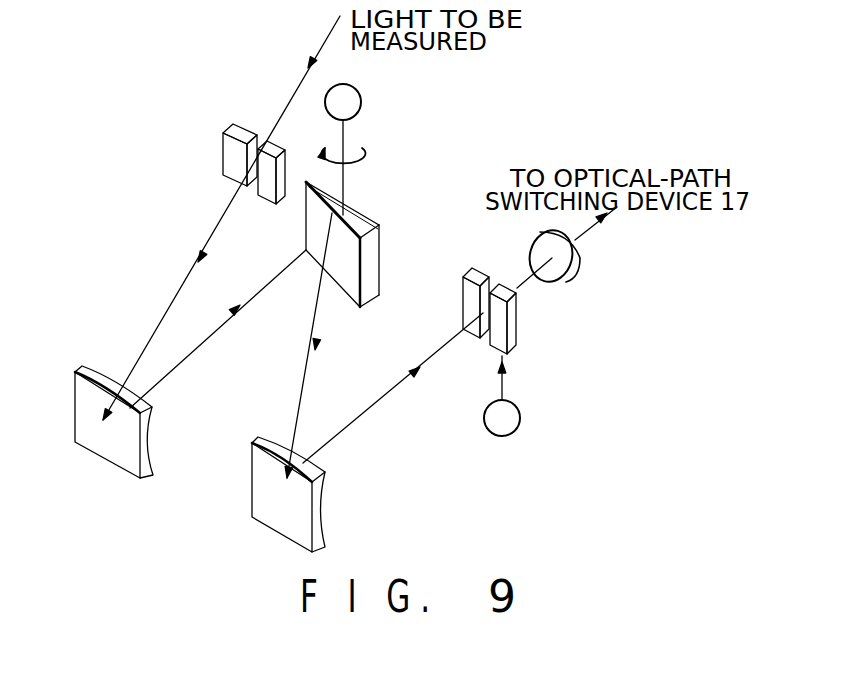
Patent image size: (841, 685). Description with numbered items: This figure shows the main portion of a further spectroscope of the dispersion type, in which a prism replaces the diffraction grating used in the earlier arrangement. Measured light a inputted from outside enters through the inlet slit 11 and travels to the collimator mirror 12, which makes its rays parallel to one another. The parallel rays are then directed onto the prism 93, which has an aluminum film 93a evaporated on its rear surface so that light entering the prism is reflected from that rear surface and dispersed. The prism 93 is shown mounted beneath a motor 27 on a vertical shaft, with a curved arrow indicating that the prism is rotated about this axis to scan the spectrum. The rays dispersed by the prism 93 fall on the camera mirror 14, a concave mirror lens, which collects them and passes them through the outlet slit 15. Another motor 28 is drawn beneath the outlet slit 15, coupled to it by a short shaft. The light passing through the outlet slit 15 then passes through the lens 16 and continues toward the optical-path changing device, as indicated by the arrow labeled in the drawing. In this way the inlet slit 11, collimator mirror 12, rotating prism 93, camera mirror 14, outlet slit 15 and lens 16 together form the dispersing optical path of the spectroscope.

The measured light a is at (322, 50).
The inlet slit 11 is at (222, 158).
The collimator mirror 12 is at (120, 471).
The camera mirror 14 is at (262, 520).
The outlet slit 15 is at (517, 340).
The lens 16 is at (563, 282).
The motor 27 is at (361, 100).
The motor 28 is at (520, 416).
The prism 93 is at (335, 239).
The aluminum film 93a is at (380, 216).